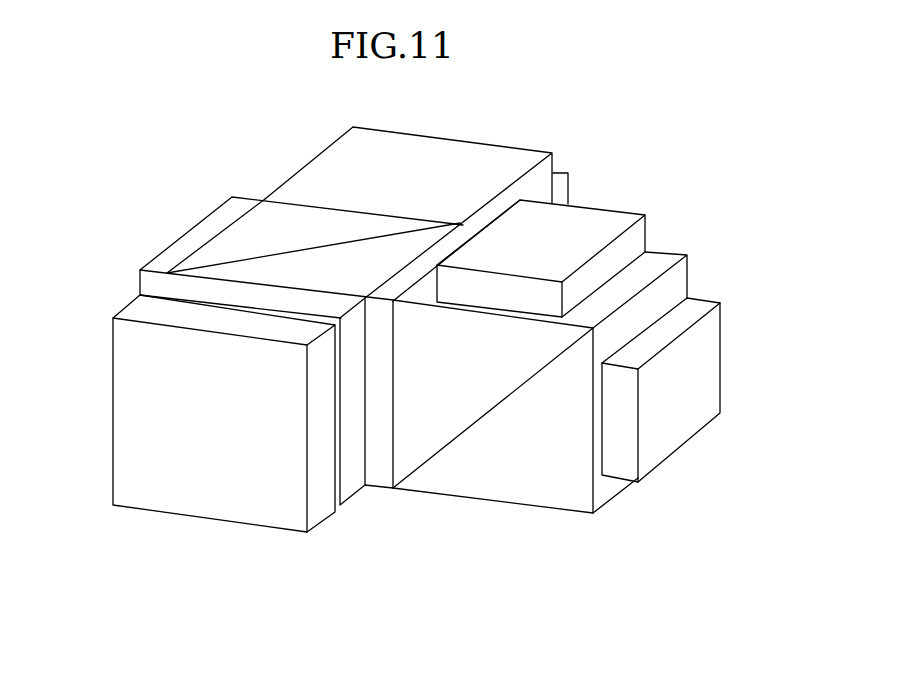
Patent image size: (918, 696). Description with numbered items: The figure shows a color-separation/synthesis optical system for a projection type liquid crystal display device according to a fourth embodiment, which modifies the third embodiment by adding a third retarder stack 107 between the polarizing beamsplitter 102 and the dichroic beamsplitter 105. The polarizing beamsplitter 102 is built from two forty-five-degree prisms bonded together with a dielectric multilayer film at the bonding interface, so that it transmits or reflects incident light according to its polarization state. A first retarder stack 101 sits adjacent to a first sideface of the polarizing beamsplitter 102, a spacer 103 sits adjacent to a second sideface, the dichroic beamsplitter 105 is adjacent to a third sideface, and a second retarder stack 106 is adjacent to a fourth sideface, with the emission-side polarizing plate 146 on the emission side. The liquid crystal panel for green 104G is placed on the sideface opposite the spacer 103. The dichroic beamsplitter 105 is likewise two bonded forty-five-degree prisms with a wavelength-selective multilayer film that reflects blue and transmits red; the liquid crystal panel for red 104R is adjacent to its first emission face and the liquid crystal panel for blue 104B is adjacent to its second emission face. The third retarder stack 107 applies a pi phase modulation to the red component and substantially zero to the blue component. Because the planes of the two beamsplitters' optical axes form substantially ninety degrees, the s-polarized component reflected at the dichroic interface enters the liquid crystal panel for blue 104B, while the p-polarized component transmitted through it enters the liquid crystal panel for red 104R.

The first retarder stack 101 is at (177, 253).
The polarizing beamsplitter 102 is at (278, 222).
The spacer 103 is at (347, 152).
The liquid crystal panel for green 104G is at (563, 190).
The liquid crystal panel for blue 104B is at (635, 238).
The liquid crystal panel for red 104R is at (670, 435).
The dichroic beamsplitter 105 is at (498, 487).
The second retarder stack 106 is at (353, 478).
The third retarder stack 107 is at (382, 468).
The emission-side polarizing plate 146 is at (125, 446).